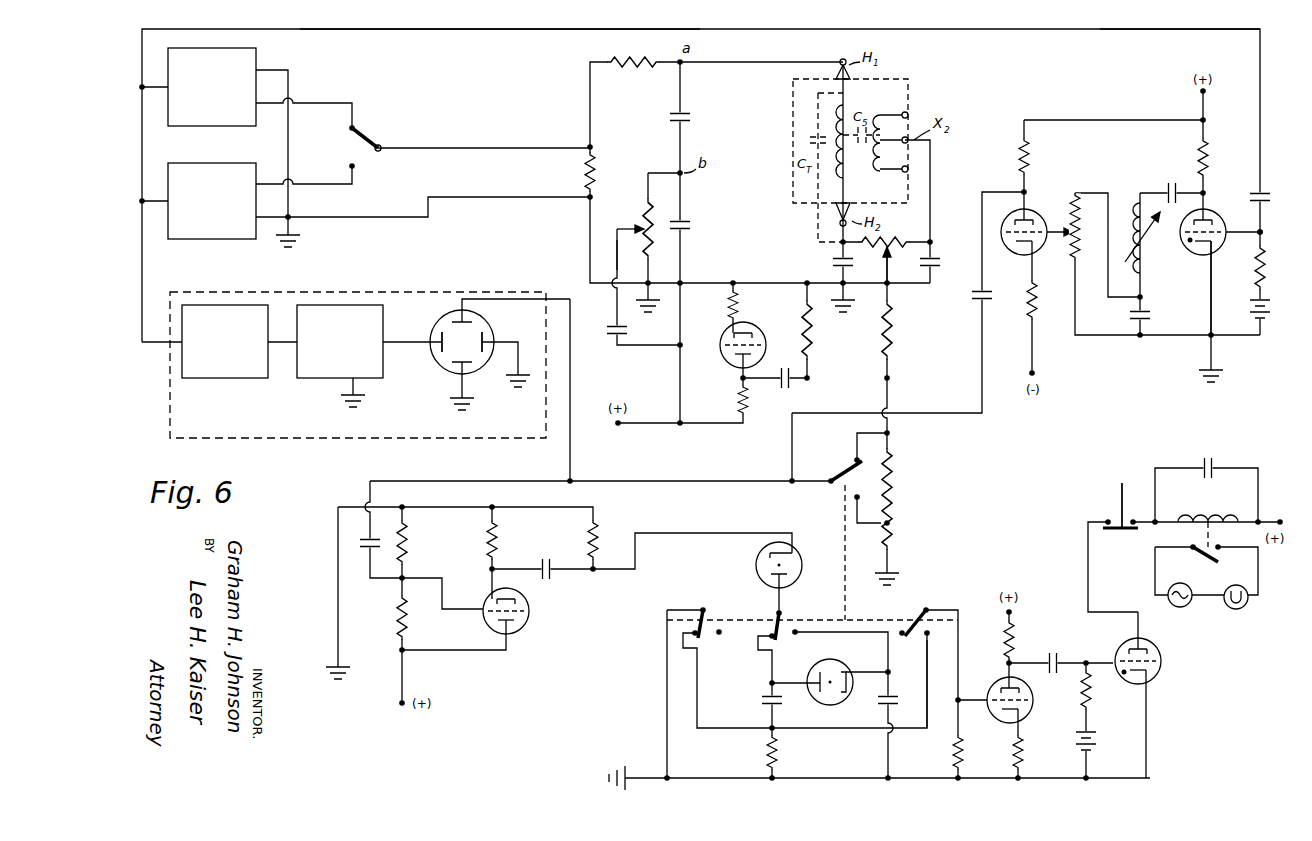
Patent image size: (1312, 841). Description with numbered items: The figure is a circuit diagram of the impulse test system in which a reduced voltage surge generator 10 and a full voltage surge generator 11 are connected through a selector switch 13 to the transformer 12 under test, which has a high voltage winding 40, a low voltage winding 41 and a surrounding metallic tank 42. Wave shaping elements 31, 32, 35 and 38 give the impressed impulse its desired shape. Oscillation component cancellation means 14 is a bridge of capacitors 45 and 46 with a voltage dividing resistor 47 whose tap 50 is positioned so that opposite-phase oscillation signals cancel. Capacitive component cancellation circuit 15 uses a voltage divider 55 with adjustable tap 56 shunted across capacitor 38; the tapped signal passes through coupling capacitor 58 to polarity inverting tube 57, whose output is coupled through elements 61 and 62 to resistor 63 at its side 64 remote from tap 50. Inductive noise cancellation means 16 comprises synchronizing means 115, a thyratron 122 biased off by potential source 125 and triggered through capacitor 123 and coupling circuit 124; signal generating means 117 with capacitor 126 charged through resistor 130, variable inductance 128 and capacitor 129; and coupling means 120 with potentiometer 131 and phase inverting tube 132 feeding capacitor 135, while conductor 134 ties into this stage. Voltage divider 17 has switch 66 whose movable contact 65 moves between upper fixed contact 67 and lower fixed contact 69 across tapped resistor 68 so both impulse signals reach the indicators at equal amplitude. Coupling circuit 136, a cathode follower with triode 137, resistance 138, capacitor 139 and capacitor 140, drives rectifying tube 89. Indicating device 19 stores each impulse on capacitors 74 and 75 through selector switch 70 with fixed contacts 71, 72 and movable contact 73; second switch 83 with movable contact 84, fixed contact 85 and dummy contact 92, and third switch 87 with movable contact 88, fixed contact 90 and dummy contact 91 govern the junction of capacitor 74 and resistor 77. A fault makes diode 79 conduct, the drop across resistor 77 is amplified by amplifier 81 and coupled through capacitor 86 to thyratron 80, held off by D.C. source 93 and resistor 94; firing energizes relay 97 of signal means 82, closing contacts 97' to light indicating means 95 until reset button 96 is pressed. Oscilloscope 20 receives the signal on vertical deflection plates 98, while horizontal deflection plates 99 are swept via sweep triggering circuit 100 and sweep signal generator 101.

The reduced voltage surge generator 10 is at (284, 54).
The full voltage surge generator 11 is at (284, 168).
The selector switch 13 is at (393, 136).
The coupling circuit 124 is at (447, 32).
The wave shaping element 31 is at (584, 168).
The wave shaping element 32 is at (633, 72).
The capacitor 35 is at (692, 119).
The capacitor 38 is at (692, 225).
The capacitive component cancellation circuit 15 is at (634, 213).
The voltage divider 55 is at (651, 218).
The adjustable tap 56 is at (623, 231).
The coupling capacitor 58 is at (606, 330).
The polarity inverting tube 57 is at (760, 332).
The coupling element 61 is at (785, 388).
The coupling element 62 is at (807, 338).
The resistor 63 is at (884, 338).
The side of resistor 63 64 is at (889, 378).
The metallic tank 42 is at (792, 170).
The high voltage winding 40 is at (840, 174).
The low voltage winding 41 is at (866, 168).
The transformer 12 is at (886, 108).
The voltage dividing resistor 47 is at (897, 240).
The capacitor 45 is at (827, 260).
The oscillation component cancellation means 14 is at (871, 263).
The tap 50 is at (890, 264).
The capacitor 46 is at (936, 262).
The conductor 134 is at (991, 192).
The coupling means 120 is at (1065, 206).
The phase inverting tube 132 is at (1022, 254).
The potentiometer 131 is at (1076, 266).
The capacitor 135 is at (987, 295).
The inductive noise cancellation means 16 is at (1118, 156).
The capacitor 126 is at (1172, 185).
The variable inductance 128 is at (1146, 261).
The signal generating means 117 is at (1177, 298).
The capacitor 129 is at (1150, 316).
The resistor 130 is at (1212, 154).
The capacitor 123 is at (1253, 197).
The synchronizing means 115 is at (1245, 208).
The thyratron 122 is at (1206, 254).
The potential source 125 is at (1252, 300).
The sweep triggering circuit 100 is at (221, 380).
The sweep signal generator 101 is at (325, 378).
The oscilloscope 20 is at (299, 423).
The vertical deflection plates 98 is at (448, 312).
The horizontal deflection plates 99 is at (489, 332).
The capacitor 139 is at (360, 543).
The resistance 138 is at (487, 540).
The coupling circuit 136 is at (554, 543).
The capacitor 140 is at (550, 578).
The triode 137 is at (528, 628).
The movable contact 65 is at (833, 476).
The upper fixed contact 67 is at (857, 458).
The switch 66 is at (871, 493).
The voltage divider 17 is at (928, 493).
The tapped resistor 68 is at (890, 520).
The lower fixed contact 69 is at (852, 500).
The rectifying tube 89 is at (754, 563).
The selector switch 70 is at (767, 615).
The second switch 83 is at (712, 601).
The movable contact 84 is at (698, 628).
The fixed contact 85 is at (698, 642).
The dummy contact 92 is at (720, 636).
The movable contact 73 is at (767, 630).
The fixed contact 71 is at (776, 640).
The fixed contact 72 is at (798, 635).
The capacitor 74 is at (762, 701).
The diode 79 is at (838, 699).
The capacitor 75 is at (899, 700).
The resistor 77 is at (778, 752).
The third switch 87 is at (937, 601).
The movable contact 88 is at (932, 624).
The fixed contact 90 is at (932, 636).
The dummy contact 91 is at (902, 636).
The amplifier 81 is at (1030, 708).
The capacitor 86 is at (1065, 655).
The thyratron 80 is at (1114, 652).
The resistor 94 is at (1092, 694).
The D.C. source 93 is at (1096, 744).
The indicating device 19 is at (1188, 731).
The reset button 96 is at (1121, 492).
The relay 97 is at (1217, 491).
The contacts 97' is at (1201, 562).
The signal means 82 is at (1137, 576).
The indicating means 95 is at (1228, 614).